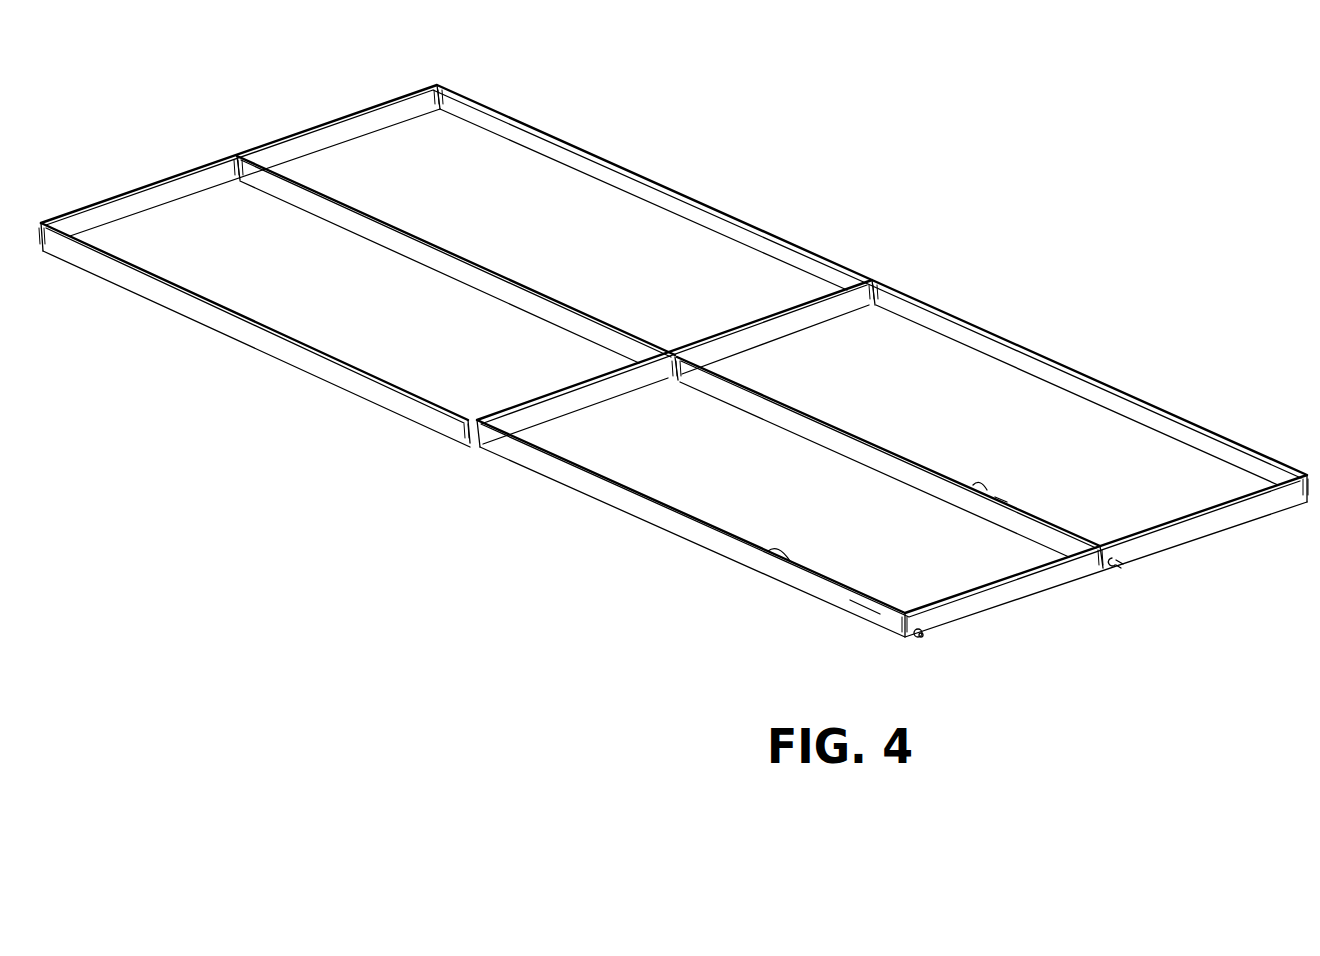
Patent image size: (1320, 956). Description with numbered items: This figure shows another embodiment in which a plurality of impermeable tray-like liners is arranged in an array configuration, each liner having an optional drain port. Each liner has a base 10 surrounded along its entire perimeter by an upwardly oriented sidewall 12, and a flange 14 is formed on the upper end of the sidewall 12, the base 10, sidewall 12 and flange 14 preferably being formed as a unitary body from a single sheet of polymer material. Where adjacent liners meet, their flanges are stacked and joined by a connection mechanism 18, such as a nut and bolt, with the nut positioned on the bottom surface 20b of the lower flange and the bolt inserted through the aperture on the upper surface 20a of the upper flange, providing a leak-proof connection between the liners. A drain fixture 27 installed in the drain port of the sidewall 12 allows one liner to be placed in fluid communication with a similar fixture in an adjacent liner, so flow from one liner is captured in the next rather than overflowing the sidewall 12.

The base 10 is at (755, 515).
The sidewall 12 is at (870, 623).
The flange 14 is at (770, 552).
The connection mechanism 18 is at (930, 465).
The upper surface of the upper flange 20a is at (980, 488).
The bottom surface of the lower flange 20b is at (1002, 498).
The drain fixture 27 is at (925, 637).